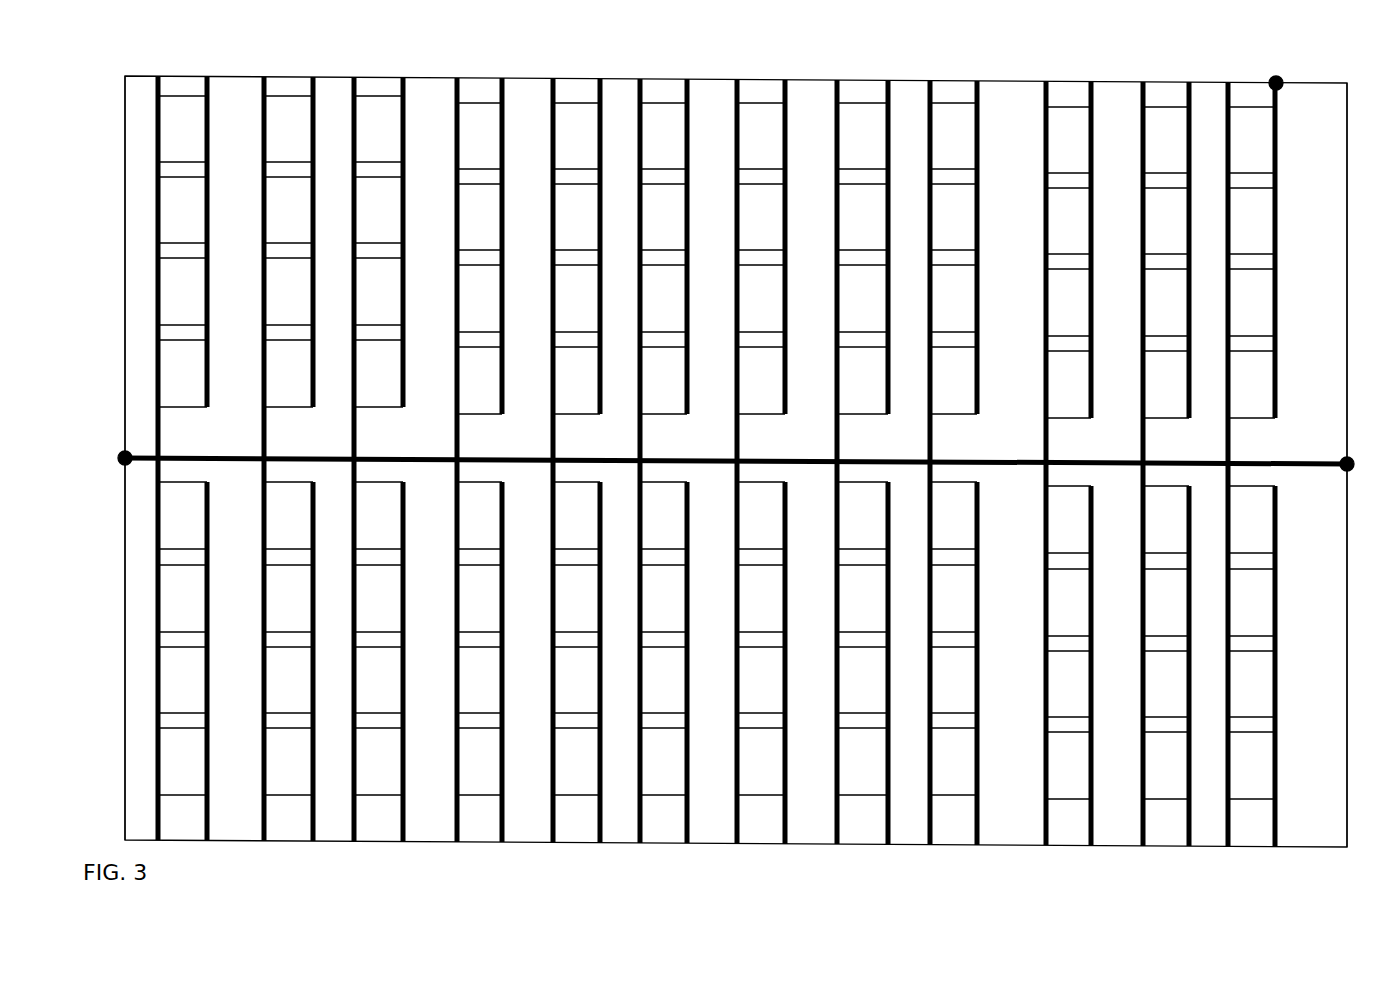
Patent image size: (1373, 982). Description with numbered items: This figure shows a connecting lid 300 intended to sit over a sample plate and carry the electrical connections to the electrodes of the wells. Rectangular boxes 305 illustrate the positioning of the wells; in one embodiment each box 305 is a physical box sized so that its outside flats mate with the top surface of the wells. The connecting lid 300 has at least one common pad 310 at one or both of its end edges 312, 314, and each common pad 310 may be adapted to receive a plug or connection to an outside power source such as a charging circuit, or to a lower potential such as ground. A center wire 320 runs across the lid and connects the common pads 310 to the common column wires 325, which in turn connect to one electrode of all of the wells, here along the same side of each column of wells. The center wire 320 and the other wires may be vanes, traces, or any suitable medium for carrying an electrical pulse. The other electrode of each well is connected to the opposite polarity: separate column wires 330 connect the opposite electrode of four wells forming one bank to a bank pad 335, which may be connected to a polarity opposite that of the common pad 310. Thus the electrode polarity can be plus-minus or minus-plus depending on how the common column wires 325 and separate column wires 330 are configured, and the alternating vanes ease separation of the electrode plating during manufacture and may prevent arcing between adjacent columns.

The connecting lid 300 is at (736, 461).
The rectangular box 305 is at (380, 128).
The common pad 310 is at (120, 462).
The end edge 312 is at (123, 273).
The end edge 314 is at (1345, 252).
The center wire 320 is at (707, 458).
The common column wire 325 is at (835, 415).
The separate column wire 330 is at (1278, 188).
The bank pad 335 is at (1282, 78).